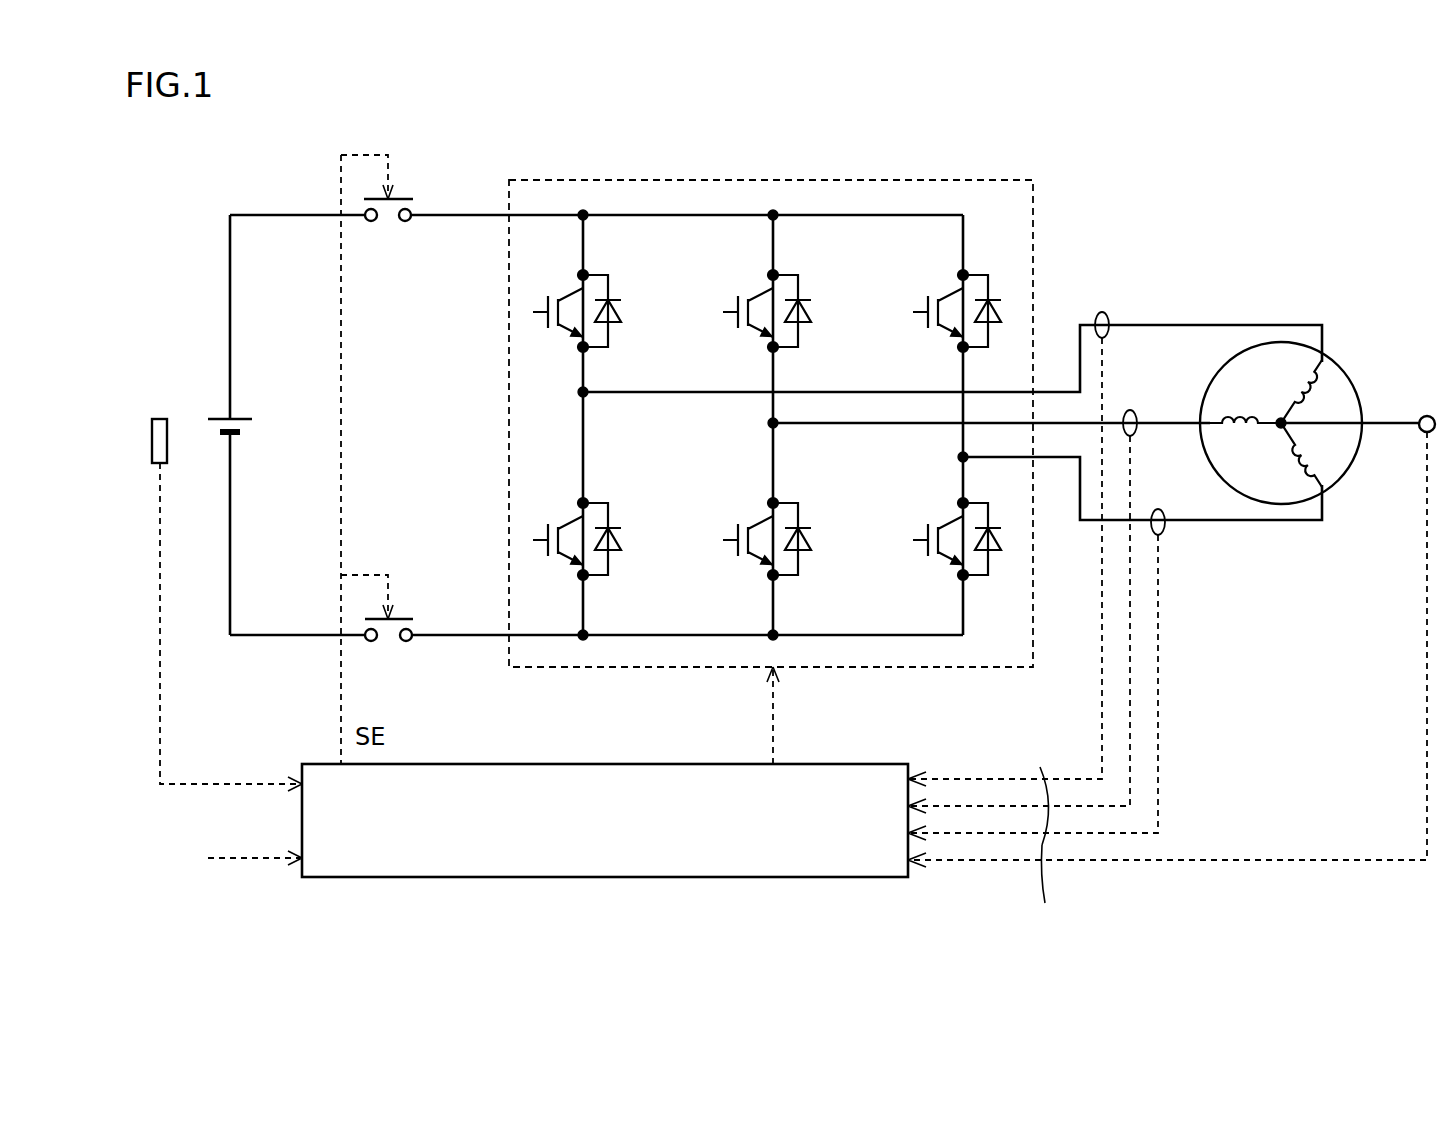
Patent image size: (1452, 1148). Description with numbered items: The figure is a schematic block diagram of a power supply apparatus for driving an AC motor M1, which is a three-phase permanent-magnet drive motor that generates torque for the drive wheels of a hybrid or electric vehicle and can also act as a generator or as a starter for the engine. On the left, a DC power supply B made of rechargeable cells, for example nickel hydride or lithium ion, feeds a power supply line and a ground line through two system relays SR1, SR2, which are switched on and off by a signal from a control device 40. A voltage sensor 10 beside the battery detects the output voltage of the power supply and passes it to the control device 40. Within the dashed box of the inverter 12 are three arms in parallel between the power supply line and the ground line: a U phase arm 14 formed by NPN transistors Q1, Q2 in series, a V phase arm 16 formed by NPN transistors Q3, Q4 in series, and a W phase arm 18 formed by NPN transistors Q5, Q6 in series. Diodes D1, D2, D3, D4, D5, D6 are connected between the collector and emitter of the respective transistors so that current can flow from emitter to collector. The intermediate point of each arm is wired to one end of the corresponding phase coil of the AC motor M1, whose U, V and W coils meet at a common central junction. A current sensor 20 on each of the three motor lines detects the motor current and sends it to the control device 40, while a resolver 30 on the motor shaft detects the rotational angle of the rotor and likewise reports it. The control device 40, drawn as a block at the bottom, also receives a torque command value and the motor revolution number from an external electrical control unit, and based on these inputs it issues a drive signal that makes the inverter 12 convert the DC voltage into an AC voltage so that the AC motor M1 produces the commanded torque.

The voltage sensor 10 is at (160, 419).
The inverter 12 is at (966, 180).
The U phase arm 14 is at (565, 407).
The V phase arm 16 is at (755, 440).
The W phase arm 18 is at (945, 463).
The current sensor 20 is at (1158, 509).
The resolver 30 is at (1427, 416).
The control device 40 is at (775, 877).
The DC power supply B is at (219, 419).
The system relay SR1 is at (402, 200).
The system relay SR2 is at (402, 620).
The AC motor M1 is at (1356, 388).
The NPN transistor Q1 is at (591, 302).
The NPN transistor Q2 is at (591, 530).
The NPN transistor Q3 is at (781, 302).
The NPN transistor Q4 is at (781, 530).
The NPN transistor Q5 is at (971, 302).
The NPN transistor Q6 is at (971, 530).
The diode D1 is at (616, 307).
The diode D2 is at (616, 535).
The diode D3 is at (806, 307).
The diode D4 is at (806, 535).
The diode D5 is at (996, 307).
The diode D6 is at (996, 535).